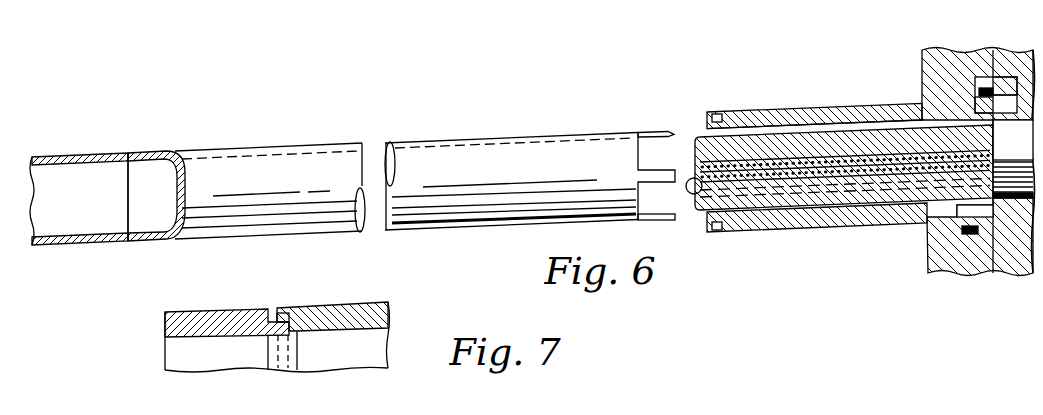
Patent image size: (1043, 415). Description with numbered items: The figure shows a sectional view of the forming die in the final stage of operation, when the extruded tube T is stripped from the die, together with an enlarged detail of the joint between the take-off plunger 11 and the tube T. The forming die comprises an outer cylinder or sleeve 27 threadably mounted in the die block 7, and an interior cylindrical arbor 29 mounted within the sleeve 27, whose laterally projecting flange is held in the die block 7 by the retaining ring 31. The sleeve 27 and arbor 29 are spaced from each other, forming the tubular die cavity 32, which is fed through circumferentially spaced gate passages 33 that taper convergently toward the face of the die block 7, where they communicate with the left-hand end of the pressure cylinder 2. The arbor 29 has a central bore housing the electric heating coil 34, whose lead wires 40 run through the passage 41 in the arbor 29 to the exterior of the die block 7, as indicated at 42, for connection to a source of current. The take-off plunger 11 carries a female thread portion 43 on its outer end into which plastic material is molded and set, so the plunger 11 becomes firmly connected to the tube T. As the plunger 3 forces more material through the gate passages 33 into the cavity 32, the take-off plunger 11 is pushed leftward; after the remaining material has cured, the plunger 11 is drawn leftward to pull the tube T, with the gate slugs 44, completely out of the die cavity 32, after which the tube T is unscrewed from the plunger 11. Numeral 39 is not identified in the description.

In FIG. 6, the pressure cylinder 2 is at (1004, 50).
In FIG. 6, the plunger 3 is at (1013, 159).
In FIG. 6, the die block 7 is at (961, 55).
In FIG. 6, the take-off plunger 11 is at (88, 157).
In FIG. 7, the take-off plunger 11 is at (217, 312).
In FIG. 6, the outer cylinder or sleeve 27 is at (816, 112).
In FIG. 6, the arbor 29 is at (852, 143).
In FIG. 6, the retaining ring 31 is at (948, 251).
In FIG. 6, the die cavity 32 is at (773, 127).
In FIG. 6, the gate passages 33 is at (952, 105).
In FIG. 6, the heating coil 34 is at (737, 162).
In FIG. 6, the member 39 is at (530, 6).
In FIG. 6, the lead wires 40 is at (686, 184).
In FIG. 6, the passage 41 is at (812, 196).
In FIG. 6, the exterior of the die block 42 is at (916, 236).
In FIG. 6, the female thread portion 43 is at (133, 241).
In FIG. 7, the female thread portion 43 is at (283, 318).
In FIG. 6, the gate slugs 44 is at (660, 133).
In FIG. 6, the extruded tube T is at (329, 144).
In FIG. 7, the extruded tube T is at (348, 304).